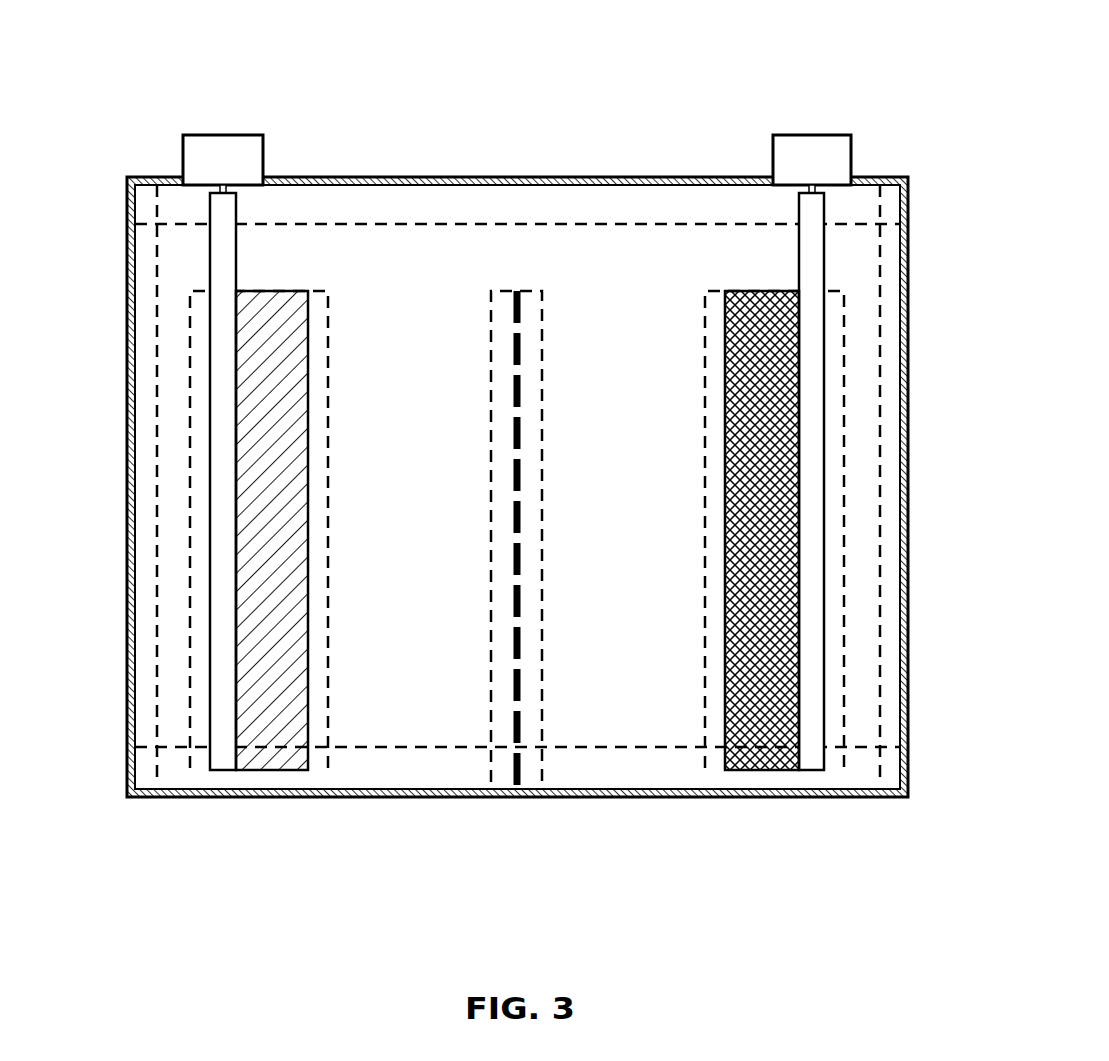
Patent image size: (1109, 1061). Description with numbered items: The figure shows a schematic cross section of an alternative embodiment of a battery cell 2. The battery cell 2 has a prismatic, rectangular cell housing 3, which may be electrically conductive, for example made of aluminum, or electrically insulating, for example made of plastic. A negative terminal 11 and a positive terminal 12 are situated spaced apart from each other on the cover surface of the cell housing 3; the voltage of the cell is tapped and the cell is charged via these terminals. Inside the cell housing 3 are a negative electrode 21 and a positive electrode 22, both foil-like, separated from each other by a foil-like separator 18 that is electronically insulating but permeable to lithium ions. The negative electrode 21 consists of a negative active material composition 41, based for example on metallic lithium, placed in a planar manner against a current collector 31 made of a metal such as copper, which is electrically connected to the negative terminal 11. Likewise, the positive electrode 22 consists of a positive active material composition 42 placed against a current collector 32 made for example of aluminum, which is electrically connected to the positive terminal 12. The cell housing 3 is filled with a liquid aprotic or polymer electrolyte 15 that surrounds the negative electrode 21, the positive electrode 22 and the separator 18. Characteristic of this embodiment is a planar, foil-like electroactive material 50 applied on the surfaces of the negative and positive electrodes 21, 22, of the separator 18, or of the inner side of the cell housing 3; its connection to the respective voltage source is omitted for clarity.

The battery cell 2 is at (350, 100).
The cell housing 3 is at (607, 178).
The negative terminal 11 is at (835, 148).
The positive terminal 12 is at (200, 147).
The electrolyte 15 is at (400, 705).
The separator 18 is at (520, 710).
The negative electrode 21 is at (843, 477).
The positive electrode 22 is at (188, 477).
The current collector 31 is at (810, 528).
The current collector 32 is at (223, 532).
The negative active material composition 41 is at (776, 620).
The positive active material composition 42 is at (257, 625).
The electroactive material 50 is at (865, 200).